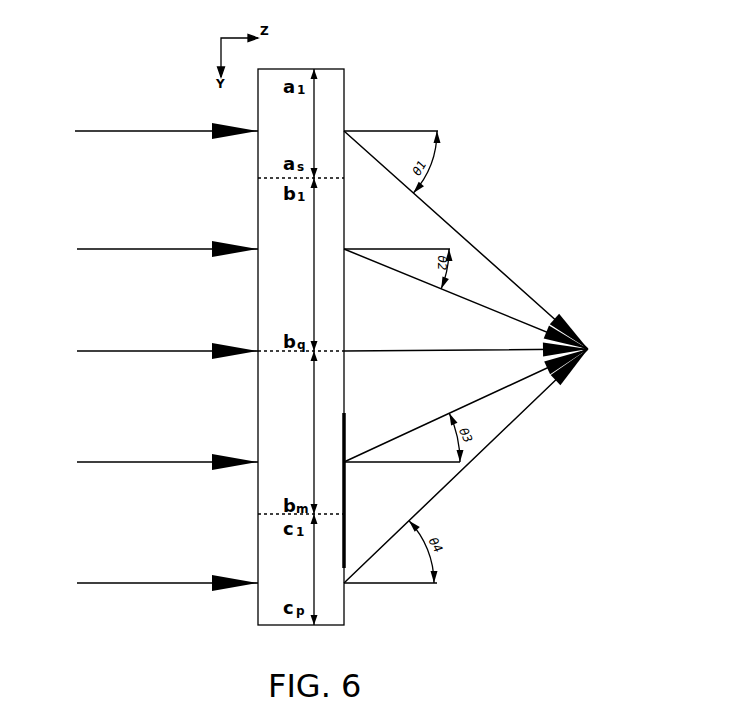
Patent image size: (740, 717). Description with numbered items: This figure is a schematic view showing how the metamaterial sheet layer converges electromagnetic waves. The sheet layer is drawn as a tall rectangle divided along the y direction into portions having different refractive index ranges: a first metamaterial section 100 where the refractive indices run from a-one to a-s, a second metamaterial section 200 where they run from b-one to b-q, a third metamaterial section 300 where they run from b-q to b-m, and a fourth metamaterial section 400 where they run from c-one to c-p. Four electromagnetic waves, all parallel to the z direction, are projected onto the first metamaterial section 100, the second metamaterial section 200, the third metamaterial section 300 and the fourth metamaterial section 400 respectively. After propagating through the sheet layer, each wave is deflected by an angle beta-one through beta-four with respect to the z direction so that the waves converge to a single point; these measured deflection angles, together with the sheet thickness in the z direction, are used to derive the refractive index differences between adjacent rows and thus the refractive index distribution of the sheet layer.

The first metamaterial section 100 is at (325, 115).
The second metamaterial section 200 is at (283, 237).
The third metamaterial section 300 is at (285, 437).
The fourth metamaterial section 400 is at (278, 570).